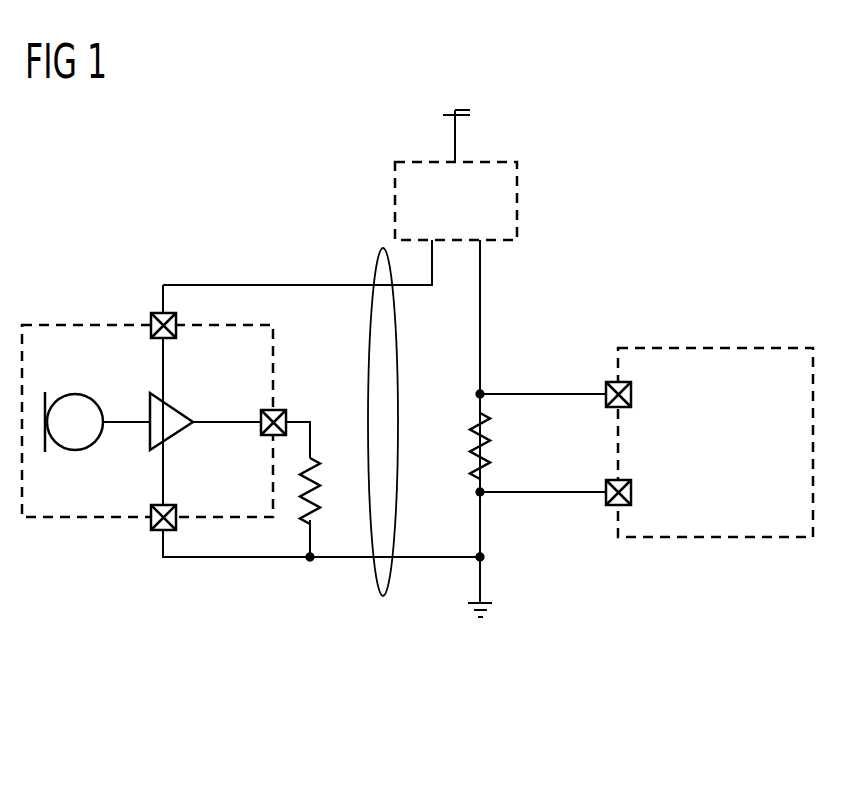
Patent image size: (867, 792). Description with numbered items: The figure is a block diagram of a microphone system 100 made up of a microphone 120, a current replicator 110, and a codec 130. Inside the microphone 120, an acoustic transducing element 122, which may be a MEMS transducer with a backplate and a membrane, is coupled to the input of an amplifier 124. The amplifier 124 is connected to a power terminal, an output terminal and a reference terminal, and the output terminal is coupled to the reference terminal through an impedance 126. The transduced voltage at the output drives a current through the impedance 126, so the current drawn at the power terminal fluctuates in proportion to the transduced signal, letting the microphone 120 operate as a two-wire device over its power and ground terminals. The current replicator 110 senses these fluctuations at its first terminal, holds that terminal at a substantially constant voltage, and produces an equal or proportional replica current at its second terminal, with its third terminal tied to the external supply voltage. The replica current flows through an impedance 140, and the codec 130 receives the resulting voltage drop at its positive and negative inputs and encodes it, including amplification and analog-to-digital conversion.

The microphone system 100 is at (697, 108).
The current replicator 110 is at (395, 195).
The microphone 120 is at (90, 325).
The acoustic transducing element 122 is at (95, 395).
The amplifier 124 is at (148, 433).
The impedance 126 is at (313, 460).
The codec 130 is at (708, 348).
The impedance 140 is at (478, 416).